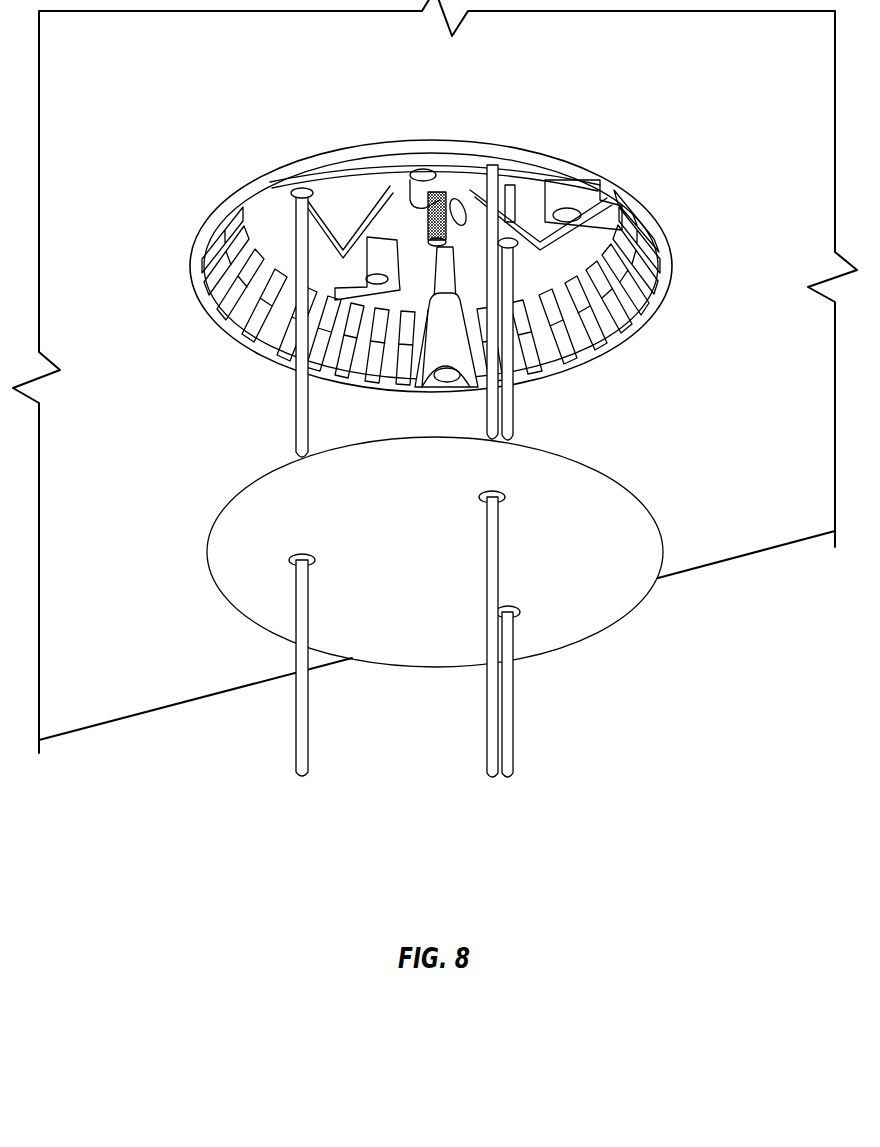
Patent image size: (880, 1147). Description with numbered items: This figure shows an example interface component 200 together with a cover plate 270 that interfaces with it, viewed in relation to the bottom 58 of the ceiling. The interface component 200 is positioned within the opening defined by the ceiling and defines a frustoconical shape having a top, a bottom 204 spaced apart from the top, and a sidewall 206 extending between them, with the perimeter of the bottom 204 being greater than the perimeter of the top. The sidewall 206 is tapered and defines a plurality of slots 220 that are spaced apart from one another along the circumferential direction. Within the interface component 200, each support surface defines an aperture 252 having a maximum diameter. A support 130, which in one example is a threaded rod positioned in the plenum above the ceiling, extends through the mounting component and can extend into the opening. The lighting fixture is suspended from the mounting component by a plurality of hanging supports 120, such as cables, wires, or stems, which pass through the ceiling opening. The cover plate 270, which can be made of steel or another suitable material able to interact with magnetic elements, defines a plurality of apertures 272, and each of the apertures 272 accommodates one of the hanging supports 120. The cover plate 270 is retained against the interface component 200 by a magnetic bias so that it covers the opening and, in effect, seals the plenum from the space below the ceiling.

The bottom of the ceiling 58 is at (68, 712).
The interface component 200 is at (673, 125).
The bottom 204 is at (672, 262).
The sidewall 206 is at (270, 235).
The slots 220 is at (257, 325).
The support 130 is at (455, 198).
The aperture 252 is at (418, 166).
The cover plate 270 is at (431, 563).
The hanging supports 120 is at (297, 418).
The apertures 272 is at (303, 548).